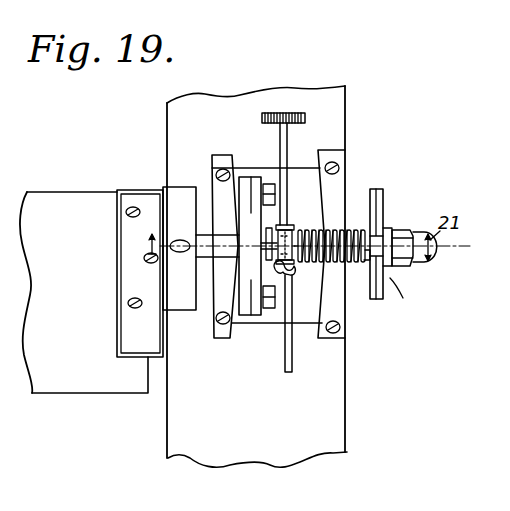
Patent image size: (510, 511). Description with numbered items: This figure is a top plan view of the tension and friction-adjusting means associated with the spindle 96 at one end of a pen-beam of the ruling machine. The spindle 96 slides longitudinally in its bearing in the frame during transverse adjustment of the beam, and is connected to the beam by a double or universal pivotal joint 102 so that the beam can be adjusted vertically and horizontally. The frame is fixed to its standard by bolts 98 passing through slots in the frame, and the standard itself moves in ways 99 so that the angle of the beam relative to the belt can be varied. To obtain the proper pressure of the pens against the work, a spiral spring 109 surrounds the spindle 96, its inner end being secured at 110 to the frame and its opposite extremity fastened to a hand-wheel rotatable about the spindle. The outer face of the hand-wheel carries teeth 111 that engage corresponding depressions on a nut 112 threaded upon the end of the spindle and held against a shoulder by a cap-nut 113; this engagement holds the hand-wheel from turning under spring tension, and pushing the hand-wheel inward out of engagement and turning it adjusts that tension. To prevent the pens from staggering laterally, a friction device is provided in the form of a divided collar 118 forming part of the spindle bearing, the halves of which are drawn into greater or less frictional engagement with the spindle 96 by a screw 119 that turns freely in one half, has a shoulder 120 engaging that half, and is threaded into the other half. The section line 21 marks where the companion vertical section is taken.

The section line 21— 21 is at (138, 246).
The spindle 96 is at (208, 254).
The bolts 98 is at (268, 185).
The ways 99 is at (236, 328).
The universal pivotal joints 102 is at (165, 190).
The spiral spring 109 is at (378, 200).
The securing point of spring inner end 110 is at (295, 270).
The teeth 111 is at (390, 282).
The nut 112 is at (395, 224).
The cap-nut 113 is at (442, 247).
The divided collar 118 is at (296, 228).
The screw 119 is at (300, 113).
The shoulder 120 is at (292, 226).